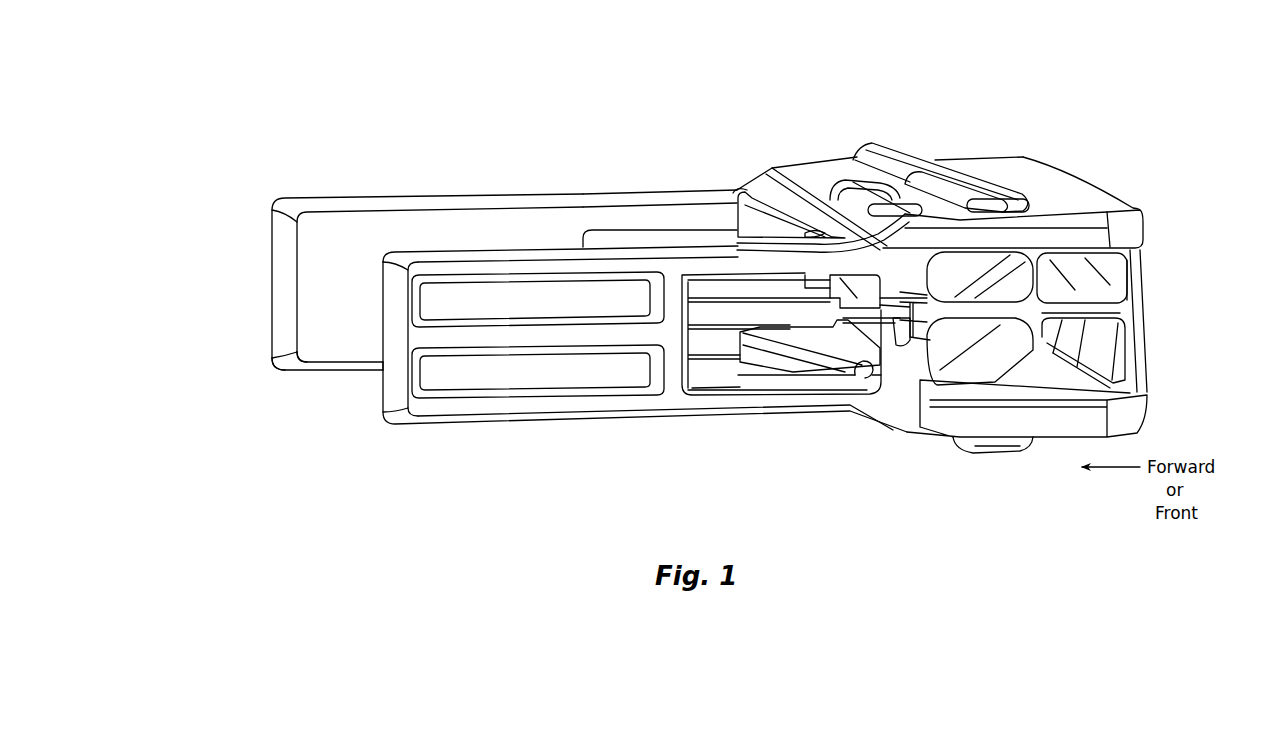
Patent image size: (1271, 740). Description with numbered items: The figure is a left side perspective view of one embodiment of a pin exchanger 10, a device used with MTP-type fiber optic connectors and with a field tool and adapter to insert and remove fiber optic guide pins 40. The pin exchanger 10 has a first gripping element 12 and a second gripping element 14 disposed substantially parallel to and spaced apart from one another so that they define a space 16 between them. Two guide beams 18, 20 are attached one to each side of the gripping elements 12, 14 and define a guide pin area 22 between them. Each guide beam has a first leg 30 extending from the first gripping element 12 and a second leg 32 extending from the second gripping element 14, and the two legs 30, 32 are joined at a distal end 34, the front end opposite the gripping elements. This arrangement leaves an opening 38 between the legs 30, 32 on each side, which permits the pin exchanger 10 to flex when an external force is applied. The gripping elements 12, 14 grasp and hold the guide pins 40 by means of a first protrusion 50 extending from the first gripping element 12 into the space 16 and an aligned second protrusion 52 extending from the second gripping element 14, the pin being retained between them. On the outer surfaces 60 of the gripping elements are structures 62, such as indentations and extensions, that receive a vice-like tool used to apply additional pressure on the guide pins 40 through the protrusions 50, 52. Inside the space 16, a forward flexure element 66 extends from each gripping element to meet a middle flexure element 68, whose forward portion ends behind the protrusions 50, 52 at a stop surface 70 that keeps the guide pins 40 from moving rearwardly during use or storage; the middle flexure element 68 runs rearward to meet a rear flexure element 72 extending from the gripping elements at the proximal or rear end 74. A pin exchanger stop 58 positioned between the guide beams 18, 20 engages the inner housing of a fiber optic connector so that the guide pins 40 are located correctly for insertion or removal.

The pin exchanger 10 is at (1065, 104).
The first gripping element 12 is at (1152, 228).
The second gripping element 14 is at (1150, 412).
The space 16 is at (1155, 285).
The guide beam 18 is at (433, 426).
The guide beam 20 is at (283, 370).
The guide pin area 22 is at (348, 388).
The first leg 30 is at (652, 190).
The second leg 32 is at (763, 414).
The distal end 34 is at (267, 298).
The opening 38 is at (723, 372).
The fiber optic guide pin 40 is at (793, 313).
The first protrusion 50 is at (812, 278).
The second protrusion 52 is at (858, 371).
The pin exchanger stop 58 is at (745, 205).
The outer surface 60 is at (1064, 197).
The structures 62 is at (847, 189).
The forward flexure element 66 is at (1077, 190).
The middle flexure element 68 is at (1120, 313).
The stop surface 70 is at (905, 312).
The rear flexure element 72 is at (1140, 360).
The rear end 74 is at (1165, 256).